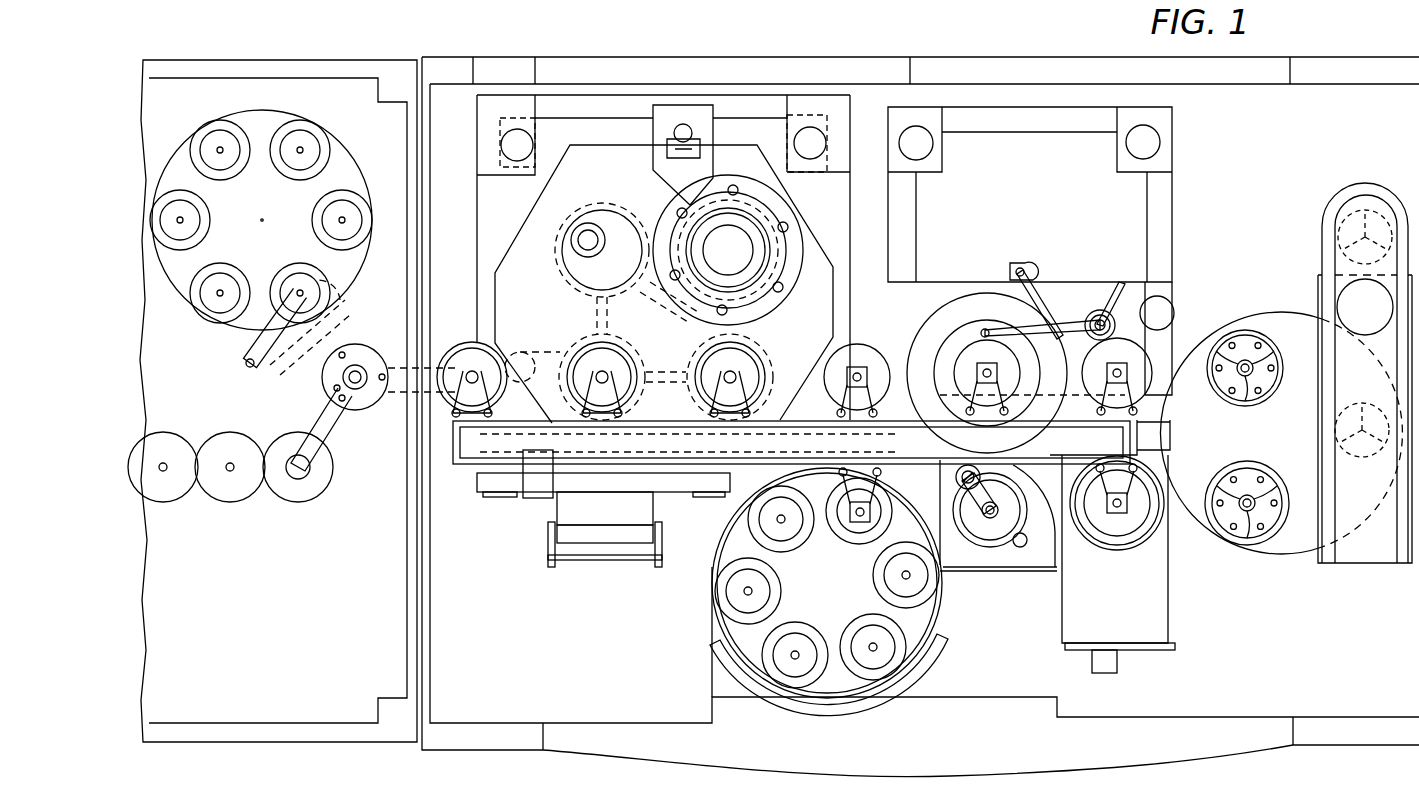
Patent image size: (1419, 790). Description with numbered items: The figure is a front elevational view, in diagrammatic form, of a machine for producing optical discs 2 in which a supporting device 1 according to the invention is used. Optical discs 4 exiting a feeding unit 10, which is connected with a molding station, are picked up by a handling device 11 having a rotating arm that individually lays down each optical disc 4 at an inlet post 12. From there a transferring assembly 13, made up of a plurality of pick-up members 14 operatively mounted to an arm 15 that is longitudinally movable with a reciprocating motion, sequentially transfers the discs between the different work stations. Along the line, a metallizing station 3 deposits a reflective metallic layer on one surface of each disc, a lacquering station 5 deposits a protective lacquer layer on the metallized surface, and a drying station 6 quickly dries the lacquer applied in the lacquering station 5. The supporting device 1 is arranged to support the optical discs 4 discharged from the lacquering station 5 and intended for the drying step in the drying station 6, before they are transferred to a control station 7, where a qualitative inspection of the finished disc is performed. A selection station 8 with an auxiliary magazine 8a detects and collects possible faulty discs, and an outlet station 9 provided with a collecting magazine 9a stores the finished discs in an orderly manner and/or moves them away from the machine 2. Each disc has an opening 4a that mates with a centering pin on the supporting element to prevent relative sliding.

The supporting device 1 is at (1285, 294).
The machine for producing optical discs 2 is at (570, 763).
The metallizing station 3 is at (617, 142).
The optical disc 4 is at (287, 450).
The opening 4a is at (232, 470).
The lacquering station 5 is at (983, 276).
The drying station 6 is at (1319, 519).
The control station 7 is at (1153, 659).
The selection station 8 is at (993, 552).
The auxiliary magazine 8a is at (1012, 522).
The outlet station 9 is at (847, 702).
The collecting magazine 9a is at (795, 597).
The feeding unit 10 is at (181, 418).
The handling device 11 is at (330, 426).
The inlet post 12 is at (463, 338).
The transferring assembly 13 is at (530, 508).
The pick-up members 14 is at (737, 414).
The arm 15 is at (918, 440).